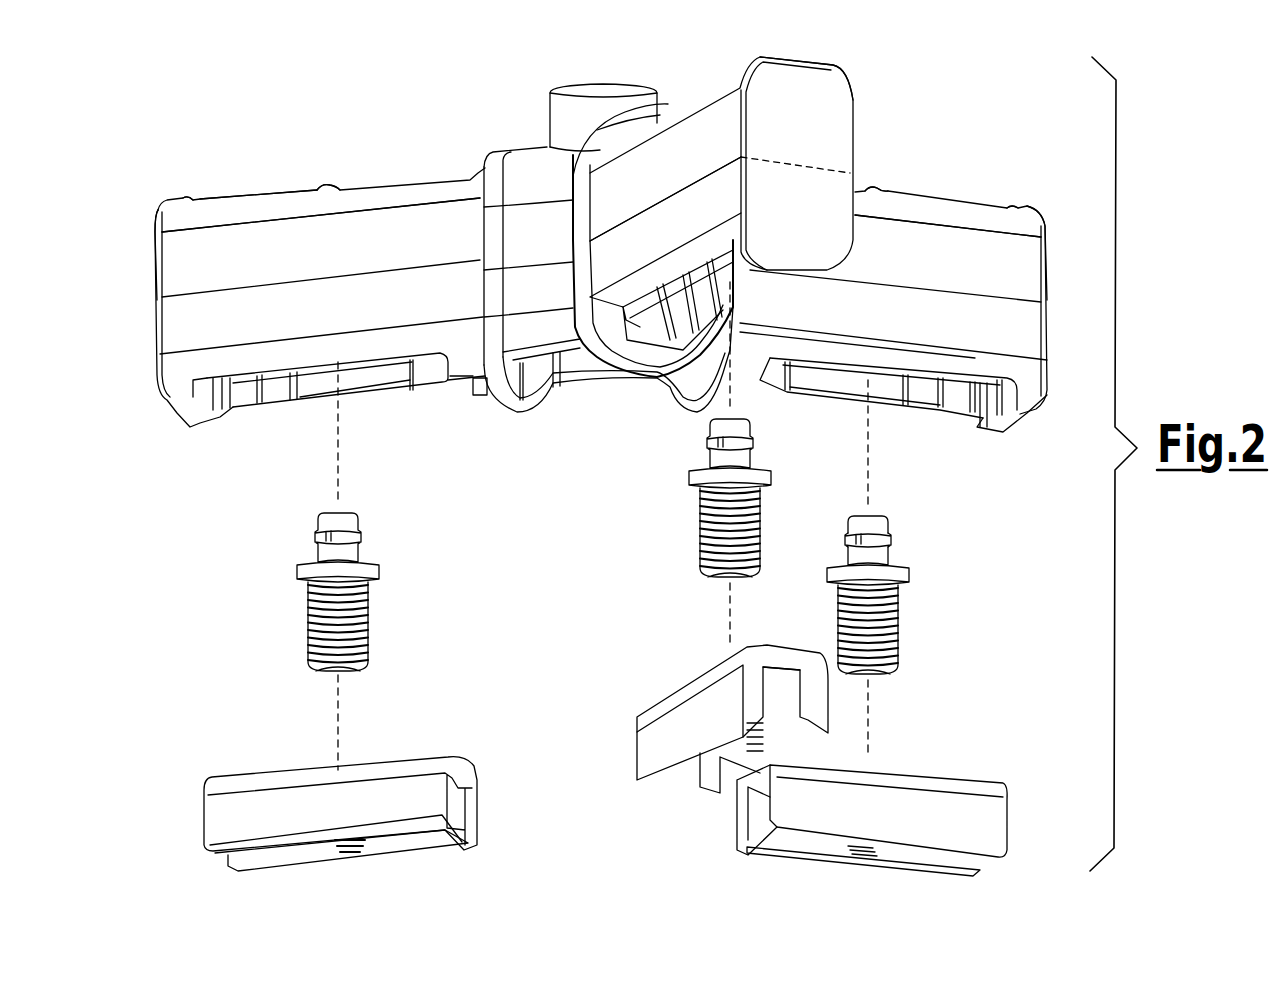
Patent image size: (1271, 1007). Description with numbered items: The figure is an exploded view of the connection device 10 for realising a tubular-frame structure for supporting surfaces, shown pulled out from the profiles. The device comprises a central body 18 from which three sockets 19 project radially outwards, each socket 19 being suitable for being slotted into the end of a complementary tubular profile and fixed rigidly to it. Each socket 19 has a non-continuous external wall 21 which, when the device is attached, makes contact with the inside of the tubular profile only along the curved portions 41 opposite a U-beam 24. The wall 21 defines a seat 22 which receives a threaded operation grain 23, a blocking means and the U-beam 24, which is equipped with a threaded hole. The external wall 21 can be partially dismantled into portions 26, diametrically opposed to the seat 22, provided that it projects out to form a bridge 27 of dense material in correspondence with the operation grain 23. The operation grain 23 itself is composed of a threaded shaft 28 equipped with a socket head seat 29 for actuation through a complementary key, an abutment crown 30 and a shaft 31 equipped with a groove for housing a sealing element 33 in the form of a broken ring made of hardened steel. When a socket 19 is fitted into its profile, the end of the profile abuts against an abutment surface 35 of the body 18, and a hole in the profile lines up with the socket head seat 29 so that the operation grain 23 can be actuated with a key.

The connection device 10 is at (190, 129).
The body 18 is at (602, 96).
The socket 19 is at (157, 213).
The external wall 21 is at (170, 277).
The seat 22 is at (190, 428).
The operation grain 23 is at (308, 612).
The U-beam 24 is at (423, 770).
The portions 26 is at (272, 192).
The bridge 27 is at (321, 190).
The threaded shaft 28 is at (845, 629).
The socket head seat 29 is at (890, 688).
The abutment crown 30 is at (891, 567).
The shaft 31 is at (846, 513).
The sealing element 33 is at (890, 532).
The abutment surface 35 is at (556, 121).
The curved portions 41 is at (227, 212).